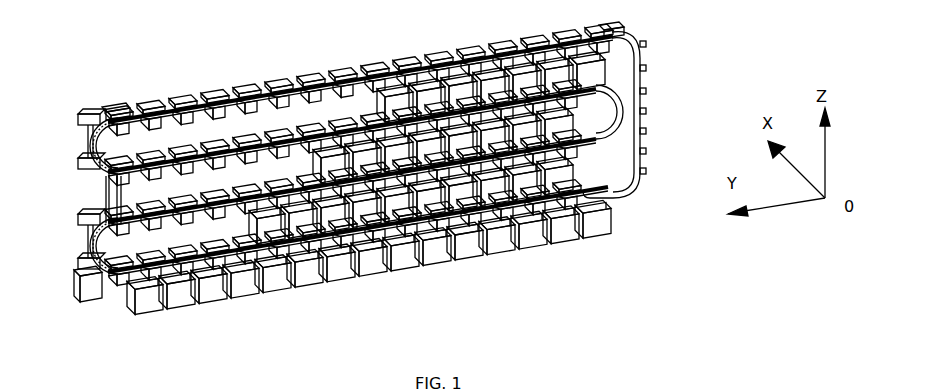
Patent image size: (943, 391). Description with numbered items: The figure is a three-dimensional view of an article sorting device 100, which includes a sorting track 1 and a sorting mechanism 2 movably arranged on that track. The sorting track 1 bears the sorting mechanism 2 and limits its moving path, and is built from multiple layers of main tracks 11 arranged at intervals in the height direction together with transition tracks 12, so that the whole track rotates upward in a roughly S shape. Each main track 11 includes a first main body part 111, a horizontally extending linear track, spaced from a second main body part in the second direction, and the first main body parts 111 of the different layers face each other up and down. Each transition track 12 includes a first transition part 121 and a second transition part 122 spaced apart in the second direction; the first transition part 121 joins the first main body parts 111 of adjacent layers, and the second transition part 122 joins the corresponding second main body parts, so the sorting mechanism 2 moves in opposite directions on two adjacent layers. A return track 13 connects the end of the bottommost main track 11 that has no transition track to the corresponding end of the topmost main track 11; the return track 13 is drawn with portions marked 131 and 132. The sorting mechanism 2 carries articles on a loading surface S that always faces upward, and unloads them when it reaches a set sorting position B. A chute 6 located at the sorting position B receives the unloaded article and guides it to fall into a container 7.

The article sorting device 100 is at (394, 30).
The sorting track 1 is at (75, 135).
The main track 11 is at (130, 100).
The first main body part 111 is at (600, 192).
The transition track 12 is at (100, 283).
The first transition part 121 is at (82, 163).
The second transition part 122 is at (77, 228).
The return track 13 is at (632, 90).
The right turning section 131 is at (633, 150).
The top corner section 132 is at (610, 47).
The sorting mechanism 2 is at (260, 75).
The chute 6 is at (482, 223).
The container 7 is at (593, 225).
The loading surface S is at (315, 67).
The sorting position B is at (188, 100).